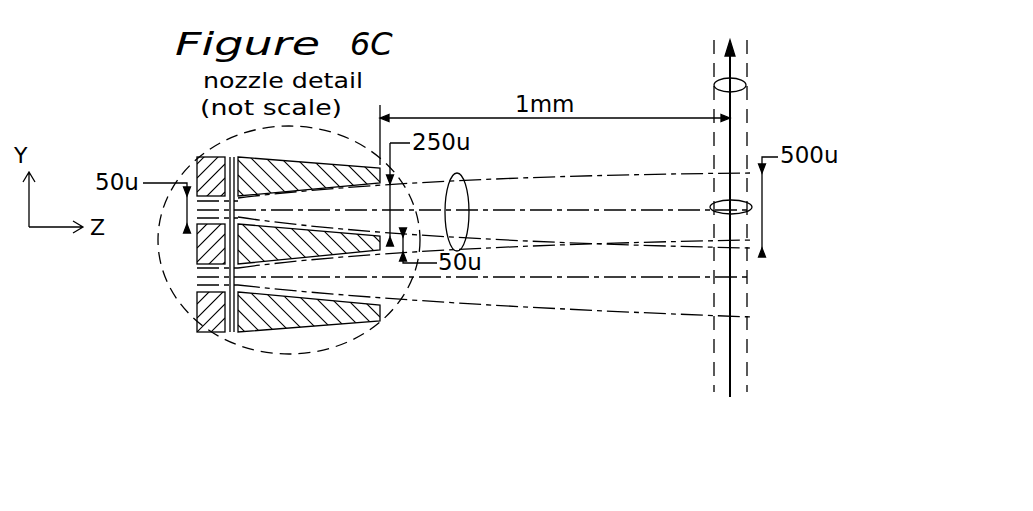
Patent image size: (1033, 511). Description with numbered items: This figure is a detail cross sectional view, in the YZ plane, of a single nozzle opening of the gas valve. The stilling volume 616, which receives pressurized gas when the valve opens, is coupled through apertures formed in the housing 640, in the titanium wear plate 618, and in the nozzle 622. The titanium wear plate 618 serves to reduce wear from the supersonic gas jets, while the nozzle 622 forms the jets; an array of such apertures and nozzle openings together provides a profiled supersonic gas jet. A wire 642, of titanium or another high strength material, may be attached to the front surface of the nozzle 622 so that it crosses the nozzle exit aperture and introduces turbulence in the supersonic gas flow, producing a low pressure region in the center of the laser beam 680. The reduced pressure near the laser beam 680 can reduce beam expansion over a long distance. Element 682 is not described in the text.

The stilling volume 616 is at (166, 257).
The titanium wear plate 618 is at (231, 258).
The nozzle 622 is at (265, 308).
The housing 640 is at (208, 258).
The wire 642 is at (460, 173).
The laser beam 680 is at (718, 80).
The focal spot 682 is at (752, 207).